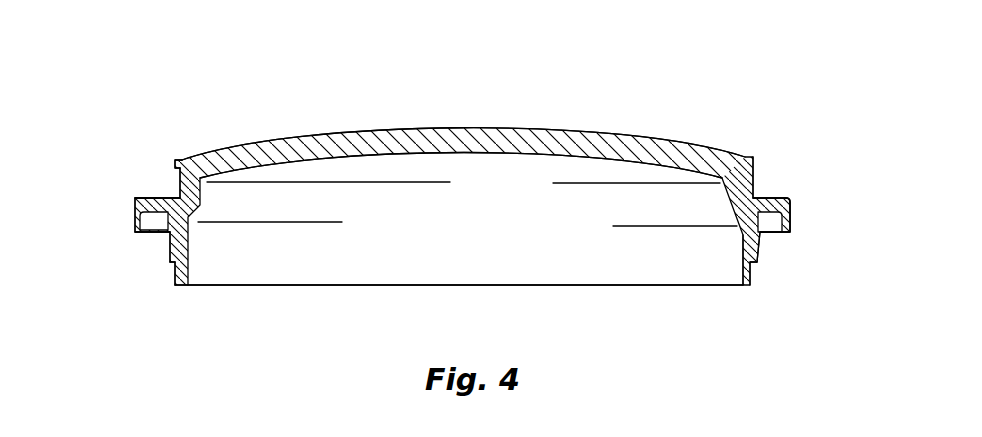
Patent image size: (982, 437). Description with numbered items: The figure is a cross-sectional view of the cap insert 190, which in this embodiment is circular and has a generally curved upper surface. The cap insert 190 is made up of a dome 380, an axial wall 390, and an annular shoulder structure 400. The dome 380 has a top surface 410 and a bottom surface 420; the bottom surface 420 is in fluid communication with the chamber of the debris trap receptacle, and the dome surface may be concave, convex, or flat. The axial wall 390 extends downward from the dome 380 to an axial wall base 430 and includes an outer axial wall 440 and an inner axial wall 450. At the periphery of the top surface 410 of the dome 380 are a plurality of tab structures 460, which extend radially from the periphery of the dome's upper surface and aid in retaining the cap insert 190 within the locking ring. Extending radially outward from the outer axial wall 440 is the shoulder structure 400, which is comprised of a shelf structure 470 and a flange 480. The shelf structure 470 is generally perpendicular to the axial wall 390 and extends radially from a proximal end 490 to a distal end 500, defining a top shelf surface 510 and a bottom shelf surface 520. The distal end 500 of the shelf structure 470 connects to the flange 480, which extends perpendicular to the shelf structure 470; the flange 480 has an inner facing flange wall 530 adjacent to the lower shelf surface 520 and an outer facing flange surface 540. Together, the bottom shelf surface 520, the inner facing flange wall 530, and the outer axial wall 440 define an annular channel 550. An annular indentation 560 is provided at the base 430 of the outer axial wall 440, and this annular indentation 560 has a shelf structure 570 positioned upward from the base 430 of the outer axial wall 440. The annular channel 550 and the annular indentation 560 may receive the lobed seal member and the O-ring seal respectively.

The cap insert 190 is at (346, 110).
The dome 380 is at (590, 135).
The axial wall 390 is at (757, 287).
The annular shoulder structure 400 is at (795, 198).
The top surface 410 is at (430, 133).
The bottom surface 420 is at (470, 157).
The axial wall base 430 is at (750, 288).
The outer axial wall 440 is at (170, 262).
The inner axial wall 450 is at (190, 242).
The tab structures 460 is at (184, 148).
The shelf structure 470 is at (160, 198).
The flange 480 is at (138, 213).
The proximal end 490 is at (170, 198).
The distal end 500 is at (129, 193).
The top shelf surface 510 is at (155, 198).
The bottom shelf surface 520 is at (192, 220).
The inner facing flange wall 530 is at (162, 226).
The outer facing flange surface 540 is at (133, 228).
The annular channel 550 is at (166, 234).
The annular indentation 560 is at (176, 285).
The shelf structure 570 is at (176, 272).